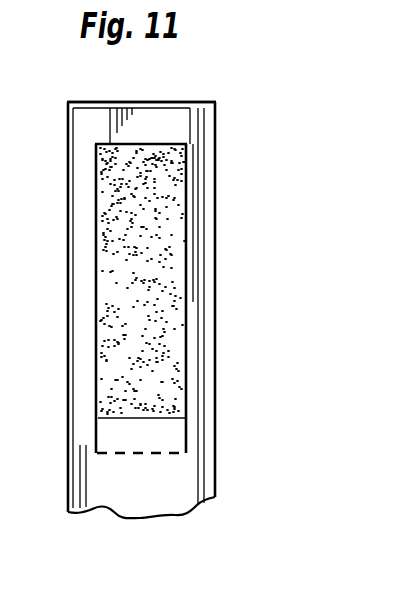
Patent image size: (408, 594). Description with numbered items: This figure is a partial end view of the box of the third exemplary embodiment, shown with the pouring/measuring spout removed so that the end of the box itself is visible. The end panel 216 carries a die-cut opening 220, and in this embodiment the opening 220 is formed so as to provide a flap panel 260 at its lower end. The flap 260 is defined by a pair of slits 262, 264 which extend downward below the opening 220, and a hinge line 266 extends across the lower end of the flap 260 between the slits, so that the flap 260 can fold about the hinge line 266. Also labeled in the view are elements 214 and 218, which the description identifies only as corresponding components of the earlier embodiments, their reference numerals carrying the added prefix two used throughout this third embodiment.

The housing body 214 is at (216, 335).
The end panel 216 is at (183, 125).
The top end wall 218 is at (183, 102).
The die-cut opening 220 is at (170, 275).
The flap panel 260 is at (167, 440).
The slit 262 is at (98, 433).
The slit 264 is at (183, 432).
The hinge line 266 is at (140, 453).